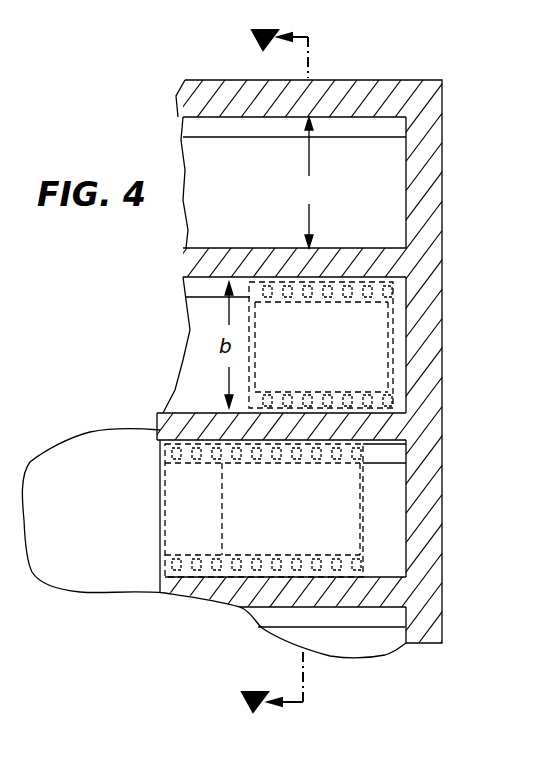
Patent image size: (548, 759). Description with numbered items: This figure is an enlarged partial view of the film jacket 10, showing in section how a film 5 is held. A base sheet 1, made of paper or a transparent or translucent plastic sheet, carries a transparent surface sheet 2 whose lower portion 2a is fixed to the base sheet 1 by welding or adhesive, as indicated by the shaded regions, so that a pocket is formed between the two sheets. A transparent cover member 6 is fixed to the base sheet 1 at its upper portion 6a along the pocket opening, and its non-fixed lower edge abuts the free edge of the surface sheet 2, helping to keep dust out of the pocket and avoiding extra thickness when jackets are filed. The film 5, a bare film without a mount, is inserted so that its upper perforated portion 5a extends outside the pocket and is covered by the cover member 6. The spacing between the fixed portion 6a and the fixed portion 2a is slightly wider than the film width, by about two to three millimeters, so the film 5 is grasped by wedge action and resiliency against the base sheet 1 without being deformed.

The base sheet 1 is at (90, 447).
The surface sheet 2 is at (390, 177).
The lower portion of the surface sheet 2a is at (377, 265).
The film 5 is at (374, 344).
The upper perforated portion of the film 5a is at (373, 291).
The cover member 6 is at (380, 128).
The upper portion of the cover member 6a is at (352, 92).
The film jacket 10 is at (446, 115).